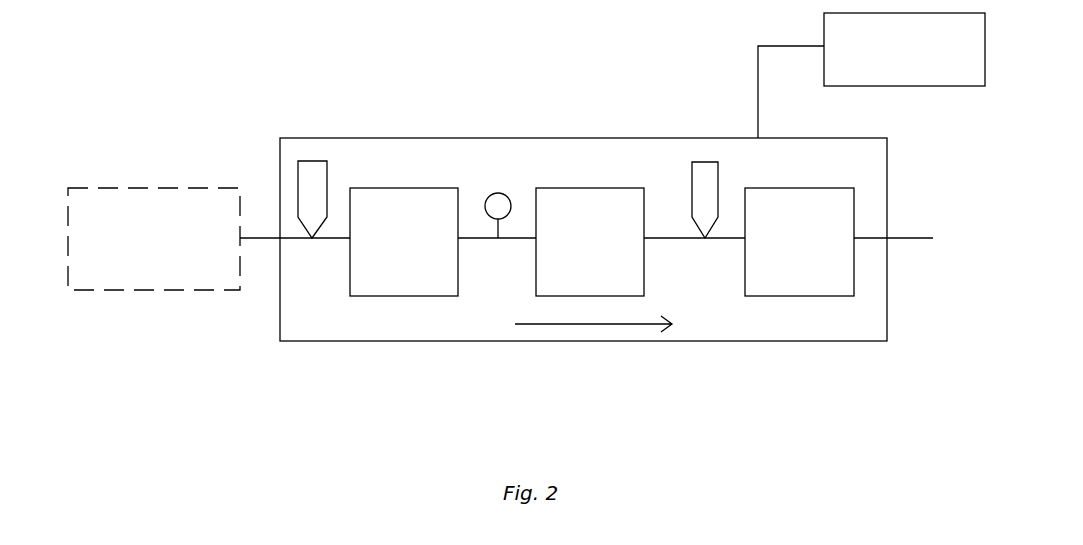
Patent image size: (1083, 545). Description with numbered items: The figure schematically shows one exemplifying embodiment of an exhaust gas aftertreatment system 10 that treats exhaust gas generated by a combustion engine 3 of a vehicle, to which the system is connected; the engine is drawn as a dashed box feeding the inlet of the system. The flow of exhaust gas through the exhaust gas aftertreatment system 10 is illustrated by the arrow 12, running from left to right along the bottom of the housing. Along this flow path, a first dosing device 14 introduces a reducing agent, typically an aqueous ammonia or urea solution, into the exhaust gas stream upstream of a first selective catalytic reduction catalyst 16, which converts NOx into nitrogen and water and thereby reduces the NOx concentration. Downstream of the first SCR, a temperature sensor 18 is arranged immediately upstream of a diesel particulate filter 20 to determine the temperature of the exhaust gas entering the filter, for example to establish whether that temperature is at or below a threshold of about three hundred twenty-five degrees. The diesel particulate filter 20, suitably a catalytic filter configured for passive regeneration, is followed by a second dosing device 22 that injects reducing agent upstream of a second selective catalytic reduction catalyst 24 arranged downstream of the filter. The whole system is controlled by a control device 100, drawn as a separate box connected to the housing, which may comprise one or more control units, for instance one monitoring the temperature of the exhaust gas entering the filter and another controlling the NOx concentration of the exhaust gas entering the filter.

The combustion engine 3 is at (137, 188).
The exhaust gas aftertreatment system 10 is at (473, 138).
The arrow 12 is at (603, 324).
The first dosing device 14 is at (312, 161).
The first selective catalytic reduction catalyst 16 is at (404, 242).
The temperature sensor 18 is at (492, 201).
The diesel particulate filter 20 is at (590, 242).
The second dosing device 22 is at (700, 162).
The second selective catalytic reduction catalyst 24 is at (799, 242).
The control device 100 is at (871, 75).